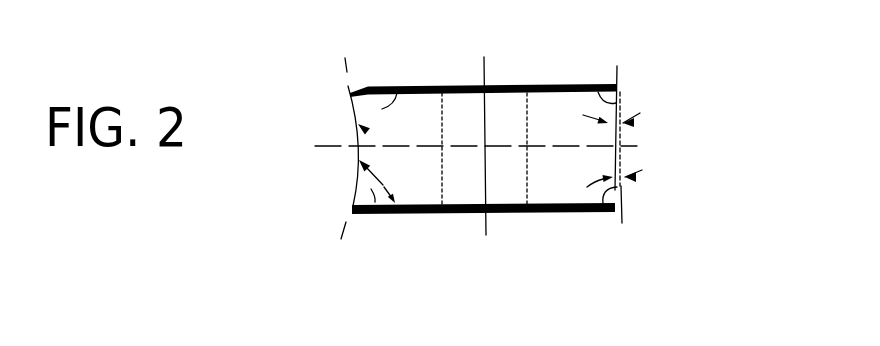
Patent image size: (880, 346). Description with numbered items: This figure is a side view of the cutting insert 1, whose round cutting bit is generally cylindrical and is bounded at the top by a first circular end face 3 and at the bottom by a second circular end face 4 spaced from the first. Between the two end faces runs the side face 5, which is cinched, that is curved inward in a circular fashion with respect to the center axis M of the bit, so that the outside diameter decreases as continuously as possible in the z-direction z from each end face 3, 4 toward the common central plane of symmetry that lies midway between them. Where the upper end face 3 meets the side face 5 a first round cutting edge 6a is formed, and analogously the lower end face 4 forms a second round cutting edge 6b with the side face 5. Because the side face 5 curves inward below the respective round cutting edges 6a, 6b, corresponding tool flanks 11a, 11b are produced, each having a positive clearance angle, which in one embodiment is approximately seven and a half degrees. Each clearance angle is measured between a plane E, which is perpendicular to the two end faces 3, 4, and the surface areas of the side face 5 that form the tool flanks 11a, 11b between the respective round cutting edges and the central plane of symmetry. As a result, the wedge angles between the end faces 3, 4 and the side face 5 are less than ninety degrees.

The cutting insert 1 is at (738, 97).
The first end face 3 is at (425, 86).
The second end face 4 is at (543, 213).
The side face 5 is at (405, 190).
The first round cutting edge 6a is at (348, 91).
The second round cutting edge 6b is at (352, 208).
The first tool flank 11a is at (592, 87).
The second tool flank 11b is at (603, 213).
The plane E is at (617, 81).
The center axis M is at (484, 57).
The z-direction z is at (328, 148).